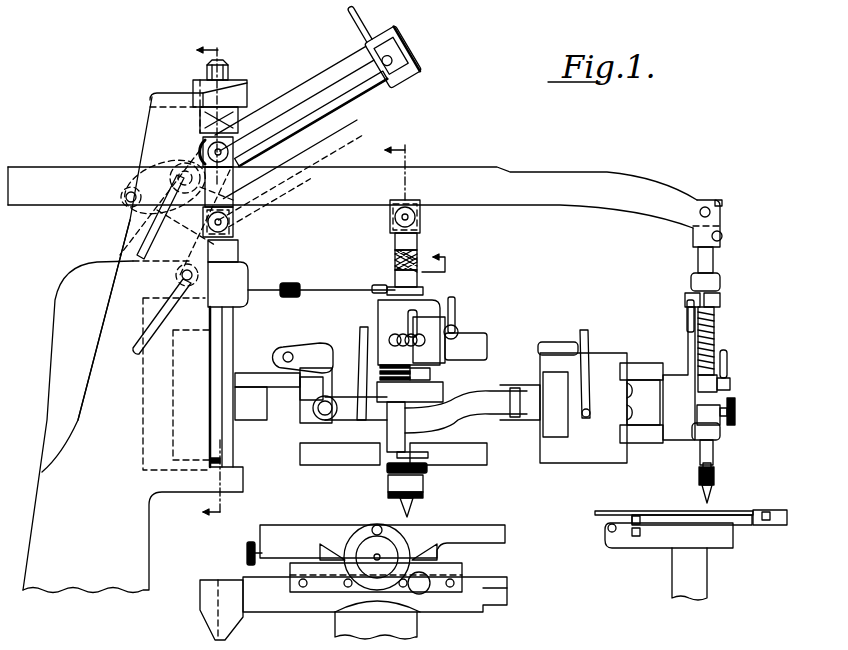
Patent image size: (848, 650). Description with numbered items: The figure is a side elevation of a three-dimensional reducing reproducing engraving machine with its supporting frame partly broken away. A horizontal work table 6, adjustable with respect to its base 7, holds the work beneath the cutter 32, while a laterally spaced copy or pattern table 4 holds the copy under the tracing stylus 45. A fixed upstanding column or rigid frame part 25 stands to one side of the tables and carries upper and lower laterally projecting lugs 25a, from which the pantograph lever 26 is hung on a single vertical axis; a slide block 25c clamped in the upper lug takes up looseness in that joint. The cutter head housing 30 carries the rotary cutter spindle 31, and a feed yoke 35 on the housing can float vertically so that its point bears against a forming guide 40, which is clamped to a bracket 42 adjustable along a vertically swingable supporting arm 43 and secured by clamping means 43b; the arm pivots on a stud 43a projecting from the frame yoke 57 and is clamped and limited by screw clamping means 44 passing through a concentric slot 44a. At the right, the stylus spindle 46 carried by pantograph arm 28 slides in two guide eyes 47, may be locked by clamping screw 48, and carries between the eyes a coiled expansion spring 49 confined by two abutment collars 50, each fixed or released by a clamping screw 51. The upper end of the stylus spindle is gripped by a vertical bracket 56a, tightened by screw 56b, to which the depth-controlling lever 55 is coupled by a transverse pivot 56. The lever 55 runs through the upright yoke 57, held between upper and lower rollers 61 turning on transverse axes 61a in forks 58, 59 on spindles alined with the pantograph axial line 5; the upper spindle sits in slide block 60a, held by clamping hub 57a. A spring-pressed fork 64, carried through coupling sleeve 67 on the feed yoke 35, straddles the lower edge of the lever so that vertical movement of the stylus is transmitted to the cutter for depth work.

The copy or pattern table 4 is at (773, 512).
The axial line of the pantograph axis 5 is at (200, 281).
The work table 6 is at (525, 538).
The base 7 is at (488, 602).
The frame column 25 is at (83, 583).
The pantograph supporting lugs 25a is at (245, 268).
The slide block 25c is at (237, 248).
The pantograph lever 26 is at (254, 344).
The pantograph arm 28 is at (670, 377).
The cutter head housing 30 is at (410, 418).
The cutter spindle 31 is at (400, 467).
The cutter 32 is at (413, 510).
The feed yoke 35 is at (420, 298).
The forming guide 40 is at (408, 74).
The bracket 42 is at (390, 31).
The supporting arm 43 is at (305, 85).
The stud 43a is at (176, 278).
The clamping means 43b is at (357, 21).
The screw clamping means 44 is at (180, 163).
The closed end slot 44a is at (126, 196).
The stylus or tracer 45 is at (715, 489).
The stylus spindle 46 is at (709, 261).
The guide eyes 47 is at (712, 279).
The clamping screw 48 is at (734, 402).
The coiled expansion spring 49 is at (717, 326).
The spring abutment collars 50 is at (720, 298).
The clamping screw 51 is at (687, 317).
The lever 55 is at (565, 155).
The transverse pivot 56 is at (724, 208).
The vertical bracket 56a is at (702, 221).
The screw 56b is at (723, 236).
The yoke 57 is at (150, 117).
The clamping hub 57a is at (247, 83).
The fork 58 is at (325, 150).
The fork 59 is at (135, 222).
The slide block 60a is at (200, 95).
The rollers 61 is at (205, 143).
The transverse axes 61a is at (195, 240).
The fork 64 is at (418, 200).
The coupling sleeve 67 is at (420, 246).